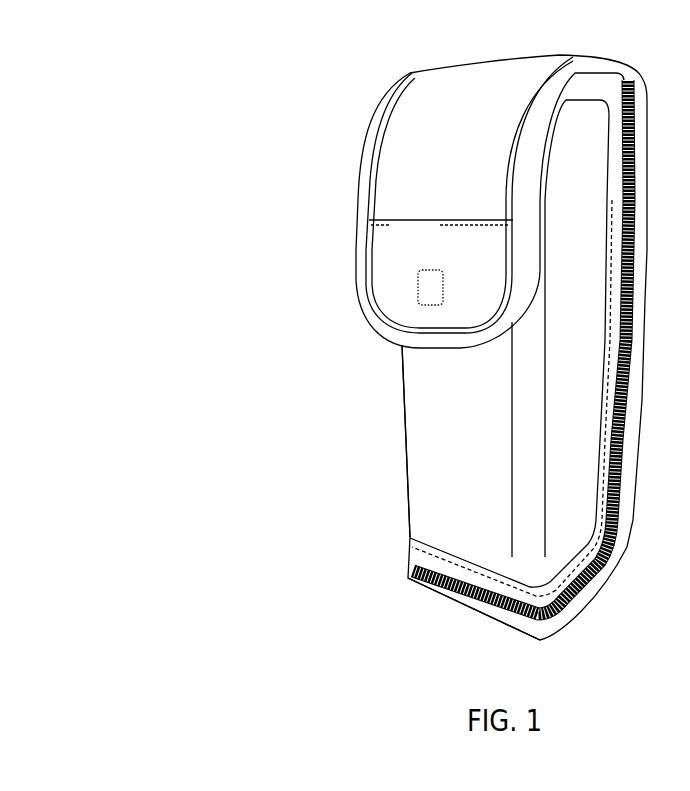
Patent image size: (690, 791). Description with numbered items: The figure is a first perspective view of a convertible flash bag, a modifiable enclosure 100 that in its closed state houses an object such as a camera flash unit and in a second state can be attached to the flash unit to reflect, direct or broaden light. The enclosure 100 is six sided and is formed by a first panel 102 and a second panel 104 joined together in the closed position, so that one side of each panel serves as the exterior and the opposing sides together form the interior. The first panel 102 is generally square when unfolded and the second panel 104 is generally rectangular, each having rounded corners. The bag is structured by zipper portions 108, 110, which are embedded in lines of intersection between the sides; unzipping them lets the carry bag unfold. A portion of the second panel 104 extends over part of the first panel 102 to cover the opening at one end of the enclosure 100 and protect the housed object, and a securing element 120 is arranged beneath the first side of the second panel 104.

The enclosure 100 is at (233, 156).
The first panel 102 is at (421, 402).
The second panel 104 is at (632, 412).
The zipper portion 108 is at (431, 576).
The zipper portion 110 is at (424, 582).
The securing element 120 is at (418, 301).